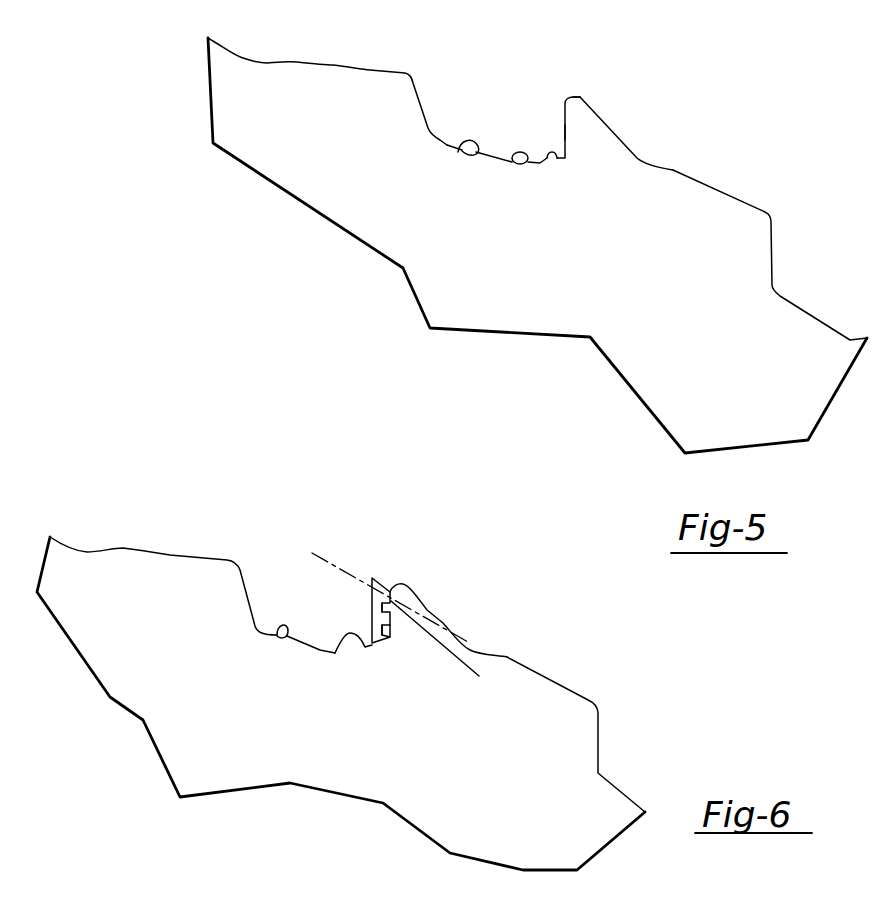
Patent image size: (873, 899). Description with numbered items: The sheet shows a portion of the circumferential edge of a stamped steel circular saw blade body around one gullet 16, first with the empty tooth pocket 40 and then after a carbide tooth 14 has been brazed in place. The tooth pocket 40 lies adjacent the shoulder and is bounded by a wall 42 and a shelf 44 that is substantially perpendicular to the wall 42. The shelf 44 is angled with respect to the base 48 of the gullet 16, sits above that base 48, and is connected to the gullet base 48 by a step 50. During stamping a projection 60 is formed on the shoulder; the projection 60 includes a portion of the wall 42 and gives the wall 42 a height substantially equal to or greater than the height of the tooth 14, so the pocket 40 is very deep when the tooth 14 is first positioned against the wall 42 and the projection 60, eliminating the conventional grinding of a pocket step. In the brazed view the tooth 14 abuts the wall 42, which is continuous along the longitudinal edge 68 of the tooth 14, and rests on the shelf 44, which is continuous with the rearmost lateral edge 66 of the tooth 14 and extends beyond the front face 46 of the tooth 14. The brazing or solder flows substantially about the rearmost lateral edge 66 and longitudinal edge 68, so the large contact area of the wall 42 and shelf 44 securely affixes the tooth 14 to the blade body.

In FIG. 6, the carbide tooth 14 is at (412, 525).
In FIG. 5, the gullet 16 is at (462, 103).
In FIG. 6, the gullet 16 is at (277, 580).
In FIG. 5, the tooth pocket 40 is at (553, 108).
In FIG. 5, the wall 42 is at (588, 130).
In FIG. 6, the wall 42 is at (393, 632).
In FIG. 5, the shelf 44 is at (549, 159).
In FIG. 6, the shelf 44 is at (338, 655).
In FIG. 6, the front face 46 is at (370, 615).
In FIG. 5, the base of the gullet 48 is at (458, 152).
In FIG. 6, the base of the gullet 48 is at (278, 640).
In FIG. 5, the step 50 is at (518, 166).
In FIG. 5, the projection 60 is at (583, 95).
In FIG. 6, the projection 60 is at (420, 584).
In FIG. 6, the rearmost lateral edge 66 is at (380, 647).
In FIG. 6, the longitudinal edge 68 is at (452, 652).